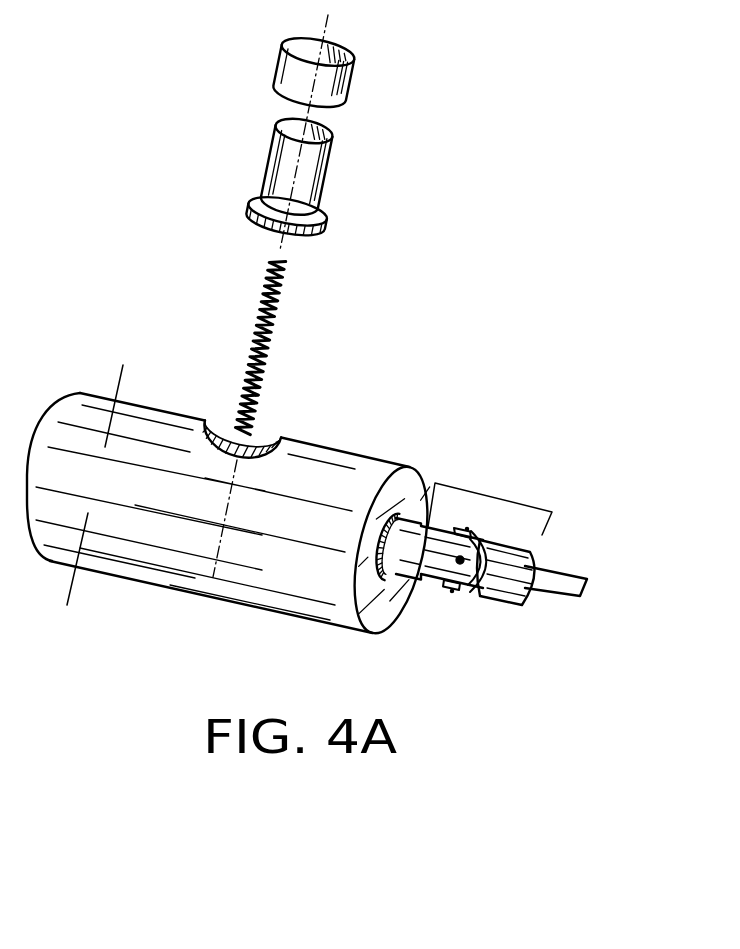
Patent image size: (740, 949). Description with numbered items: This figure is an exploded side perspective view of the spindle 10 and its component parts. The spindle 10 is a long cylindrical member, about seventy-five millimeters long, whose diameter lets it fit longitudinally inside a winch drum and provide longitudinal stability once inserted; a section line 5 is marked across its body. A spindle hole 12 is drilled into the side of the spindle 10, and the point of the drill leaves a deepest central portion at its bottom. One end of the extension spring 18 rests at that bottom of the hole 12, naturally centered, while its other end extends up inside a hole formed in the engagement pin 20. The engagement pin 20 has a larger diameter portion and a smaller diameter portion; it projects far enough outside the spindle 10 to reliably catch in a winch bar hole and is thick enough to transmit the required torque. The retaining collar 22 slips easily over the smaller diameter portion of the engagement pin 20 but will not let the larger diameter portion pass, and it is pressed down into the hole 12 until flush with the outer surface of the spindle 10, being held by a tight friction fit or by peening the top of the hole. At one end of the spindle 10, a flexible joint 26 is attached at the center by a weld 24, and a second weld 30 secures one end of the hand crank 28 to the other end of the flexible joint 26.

The section line 5- 5 is at (95, 618).
The spindle 10 is at (360, 460).
The spindle hole 12 is at (277, 437).
The extension spring 18 is at (262, 295).
The engagement pin 20 is at (270, 153).
The retaining collar 22 is at (282, 56).
The weld 24 is at (422, 507).
The flexible joint 26 is at (503, 497).
The hand crank 28 is at (578, 578).
The weld 30 is at (536, 566).